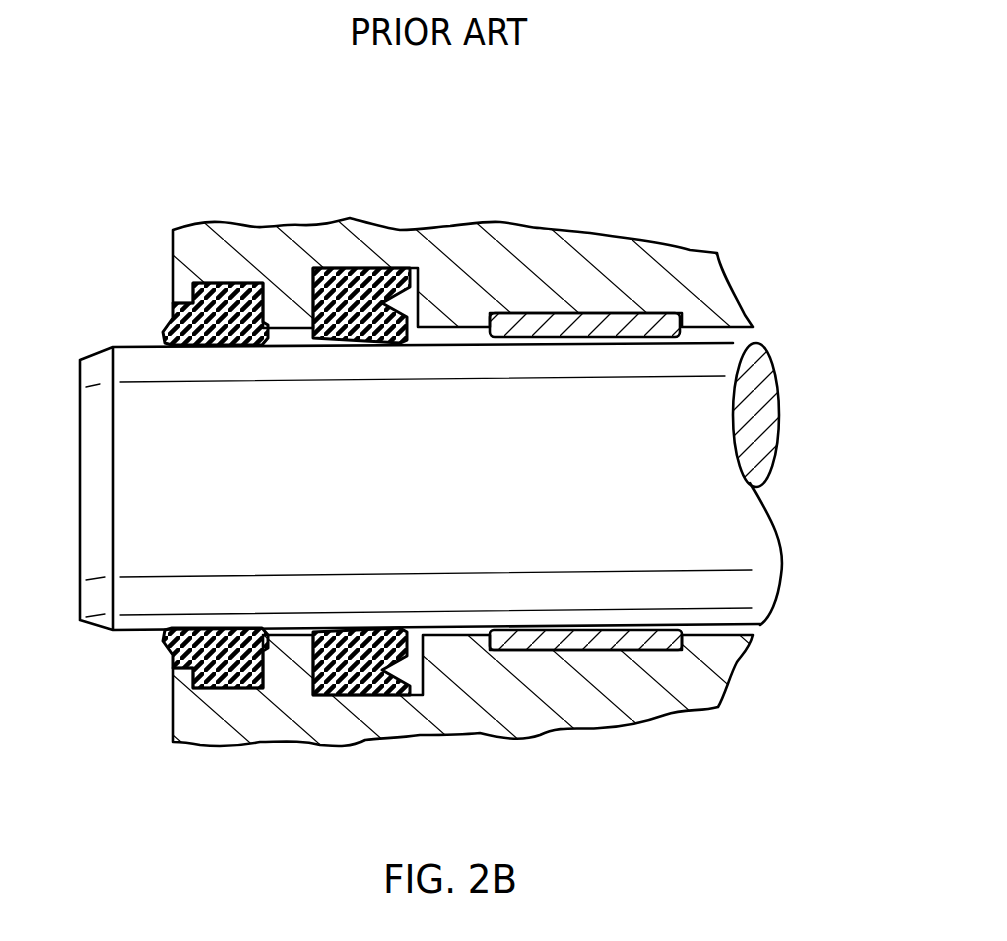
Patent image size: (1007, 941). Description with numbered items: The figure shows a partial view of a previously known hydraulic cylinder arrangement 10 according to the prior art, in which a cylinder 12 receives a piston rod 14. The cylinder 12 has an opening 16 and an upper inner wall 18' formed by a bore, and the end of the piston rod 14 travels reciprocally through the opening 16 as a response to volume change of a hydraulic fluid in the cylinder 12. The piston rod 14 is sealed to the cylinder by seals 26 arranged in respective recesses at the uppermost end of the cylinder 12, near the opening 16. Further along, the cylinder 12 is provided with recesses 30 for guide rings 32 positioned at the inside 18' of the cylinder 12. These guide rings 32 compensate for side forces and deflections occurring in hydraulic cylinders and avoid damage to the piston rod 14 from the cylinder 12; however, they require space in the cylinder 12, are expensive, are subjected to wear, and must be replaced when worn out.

The hydraulic cylinder arrangement 10 is at (619, 136).
The cylinder 12 is at (690, 267).
The piston rod 14 is at (418, 496).
The opening 16 is at (136, 316).
The upper inner wall 18' is at (670, 322).
The seals 26 is at (228, 288).
The recesses 30 is at (737, 662).
The guide rings 32 is at (600, 637).